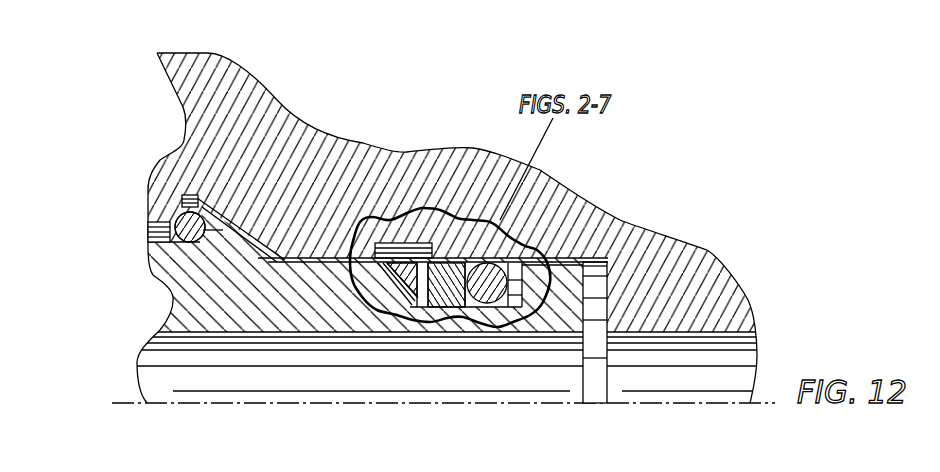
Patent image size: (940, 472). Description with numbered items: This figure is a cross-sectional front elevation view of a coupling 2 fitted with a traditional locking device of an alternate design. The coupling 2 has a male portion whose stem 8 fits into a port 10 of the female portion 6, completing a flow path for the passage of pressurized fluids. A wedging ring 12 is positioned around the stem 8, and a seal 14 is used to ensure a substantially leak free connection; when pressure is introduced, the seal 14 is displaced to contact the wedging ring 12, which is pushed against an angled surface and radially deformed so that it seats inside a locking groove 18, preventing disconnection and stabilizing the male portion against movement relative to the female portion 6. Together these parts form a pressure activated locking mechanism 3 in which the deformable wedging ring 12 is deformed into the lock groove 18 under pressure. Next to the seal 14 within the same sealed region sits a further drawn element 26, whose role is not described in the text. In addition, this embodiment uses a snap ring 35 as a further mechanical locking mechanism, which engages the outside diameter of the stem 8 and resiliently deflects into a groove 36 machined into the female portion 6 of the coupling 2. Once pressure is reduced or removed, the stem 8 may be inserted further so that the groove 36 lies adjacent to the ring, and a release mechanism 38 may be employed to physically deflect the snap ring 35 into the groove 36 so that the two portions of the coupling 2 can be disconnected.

The coupling 2 is at (110, 104).
The pressure activated locking mechanism 3 is at (532, 233).
The female portion 6 is at (702, 257).
The stem 8 is at (538, 350).
The port 10 is at (597, 288).
The wedging ring 12 is at (395, 303).
The seal 14 is at (487, 267).
The locking groove 18 is at (412, 265).
The seal body 26 is at (440, 280).
The snap ring 35 is at (177, 217).
The groove 36 is at (228, 212).
The release mechanism 38 is at (155, 232).